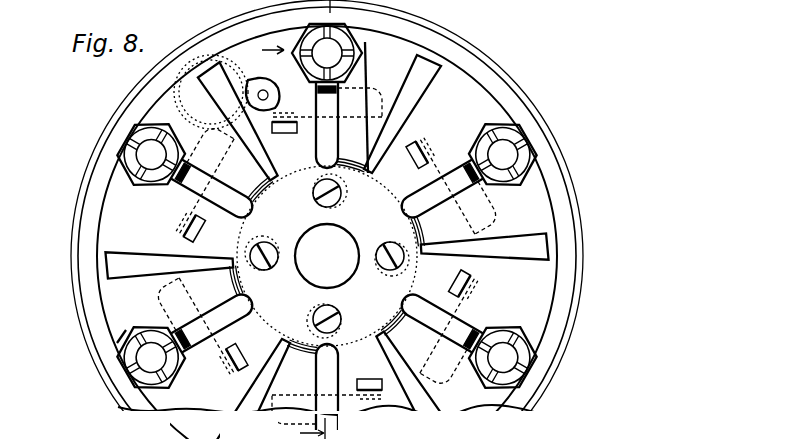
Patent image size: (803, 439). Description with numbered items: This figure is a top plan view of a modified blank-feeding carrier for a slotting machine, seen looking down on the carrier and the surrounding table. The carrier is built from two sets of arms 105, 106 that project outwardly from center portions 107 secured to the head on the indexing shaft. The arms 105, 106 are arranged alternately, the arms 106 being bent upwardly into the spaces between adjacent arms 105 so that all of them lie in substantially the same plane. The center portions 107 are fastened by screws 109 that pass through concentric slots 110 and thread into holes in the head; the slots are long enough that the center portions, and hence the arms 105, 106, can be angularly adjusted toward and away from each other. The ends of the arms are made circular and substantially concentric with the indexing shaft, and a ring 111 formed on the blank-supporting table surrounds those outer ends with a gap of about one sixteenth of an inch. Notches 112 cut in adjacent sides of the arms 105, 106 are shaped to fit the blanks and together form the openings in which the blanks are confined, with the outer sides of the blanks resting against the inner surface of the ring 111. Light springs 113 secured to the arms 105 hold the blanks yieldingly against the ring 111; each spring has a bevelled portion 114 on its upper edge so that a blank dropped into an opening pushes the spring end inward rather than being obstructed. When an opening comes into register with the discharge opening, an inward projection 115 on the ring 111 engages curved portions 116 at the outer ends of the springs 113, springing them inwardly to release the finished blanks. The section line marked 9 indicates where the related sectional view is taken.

The arms 105 is at (195, 426).
The arms 106 is at (410, 120).
The center portion 107 is at (327, 256).
The screws 109 is at (312, 191).
The concentric slots 110 is at (327, 256).
The ring 111 is at (562, 325).
The notches 112 is at (127, 332).
The light springs 113 is at (318, 392).
The bevelled portion 114 is at (330, 91).
The inward projection 115 is at (165, 103).
The curved portions 116 is at (262, 89).
The section line 9 is at (306, 219).